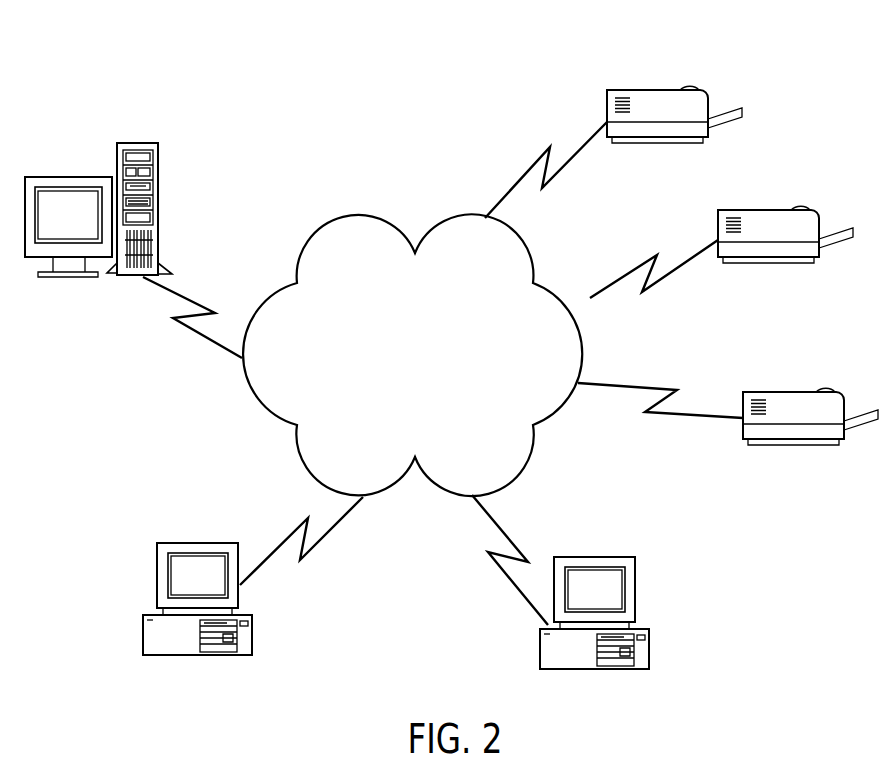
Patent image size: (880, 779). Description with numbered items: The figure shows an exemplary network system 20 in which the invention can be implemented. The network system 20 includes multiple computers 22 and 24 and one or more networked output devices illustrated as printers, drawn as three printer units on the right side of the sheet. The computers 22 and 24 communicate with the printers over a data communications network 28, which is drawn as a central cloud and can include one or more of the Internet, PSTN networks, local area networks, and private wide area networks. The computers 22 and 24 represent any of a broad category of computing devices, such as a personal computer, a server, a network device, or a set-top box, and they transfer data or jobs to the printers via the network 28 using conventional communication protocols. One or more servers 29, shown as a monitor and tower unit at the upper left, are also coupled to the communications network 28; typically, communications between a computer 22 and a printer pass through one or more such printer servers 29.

The network system 20 is at (452, 112).
The computer 22 is at (193, 543).
The computer 24 is at (594, 557).
The data communications network 28 is at (387, 221).
The server 29 is at (174, 130).